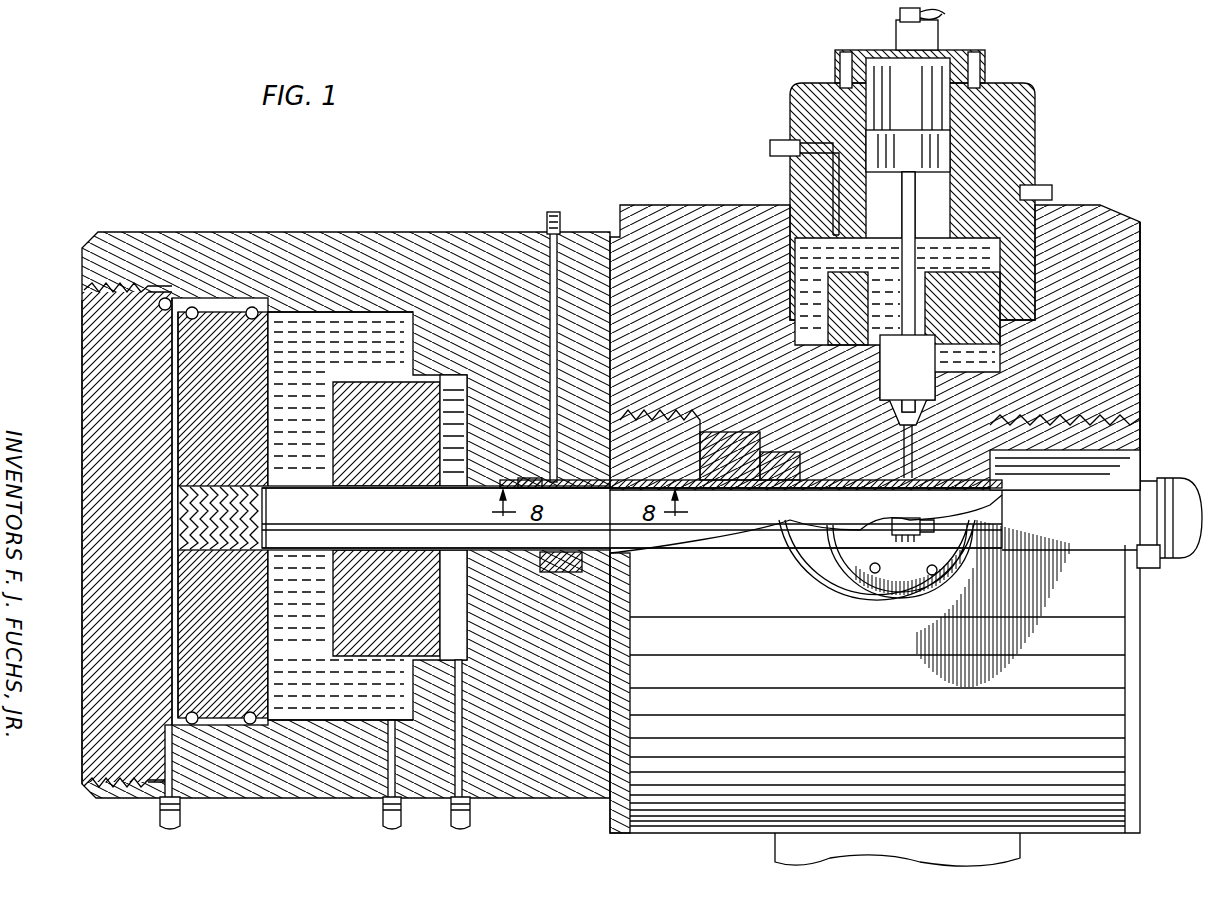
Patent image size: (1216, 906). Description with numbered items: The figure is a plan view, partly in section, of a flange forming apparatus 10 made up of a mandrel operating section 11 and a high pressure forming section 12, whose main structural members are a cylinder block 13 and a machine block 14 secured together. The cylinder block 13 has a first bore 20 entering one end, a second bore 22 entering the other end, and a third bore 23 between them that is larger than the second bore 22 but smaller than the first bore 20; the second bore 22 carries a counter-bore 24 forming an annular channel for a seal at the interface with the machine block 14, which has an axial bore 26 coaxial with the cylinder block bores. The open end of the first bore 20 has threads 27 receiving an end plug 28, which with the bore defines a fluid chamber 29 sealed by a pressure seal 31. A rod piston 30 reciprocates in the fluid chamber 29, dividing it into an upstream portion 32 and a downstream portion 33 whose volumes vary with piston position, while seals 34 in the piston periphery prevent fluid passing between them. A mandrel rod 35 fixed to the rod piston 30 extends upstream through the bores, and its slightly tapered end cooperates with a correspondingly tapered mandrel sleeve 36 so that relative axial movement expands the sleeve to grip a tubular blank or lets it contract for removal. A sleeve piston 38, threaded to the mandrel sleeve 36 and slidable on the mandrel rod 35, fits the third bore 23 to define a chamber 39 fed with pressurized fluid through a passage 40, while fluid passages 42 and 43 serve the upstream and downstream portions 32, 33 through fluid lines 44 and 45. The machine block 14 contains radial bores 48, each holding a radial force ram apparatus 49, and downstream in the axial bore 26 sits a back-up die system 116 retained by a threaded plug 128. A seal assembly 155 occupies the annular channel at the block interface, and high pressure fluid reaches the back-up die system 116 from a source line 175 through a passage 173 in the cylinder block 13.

The flange forming apparatus 10 is at (600, 138).
The mandrel operating section 11 is at (346, 486).
The high pressure forming section 12 is at (899, 505).
The cylinder block 13 is at (304, 233).
The machine block 14 is at (1142, 262).
The first bore 20 is at (345, 315).
The second bore 22 is at (492, 542).
The third bore 23 is at (456, 388).
The counter-bore 24 is at (560, 572).
The axial bore 26 is at (1140, 432).
The threads 27 is at (110, 305).
The end plug 28 is at (82, 382).
The fluid chamber 29 is at (312, 386).
The rod piston 30 is at (262, 675).
The pressure seal 31 is at (190, 305).
The upstream portion 32 is at (344, 718).
The downstream portion 33 is at (172, 680).
The seals 34 is at (252, 306).
The mandrel rod 35 is at (314, 490).
The mandrel sleeve 36 is at (1170, 568).
The sleeve piston 38 is at (336, 632).
The chamber 39 is at (458, 630).
The passage 40 is at (458, 800).
The fluid passage 42 is at (386, 800).
The fluid passage 43 is at (166, 796).
The fluid line 44 is at (398, 832).
The fluid line 45 is at (181, 818).
The radial bore 48 is at (797, 338).
The radial force ram apparatus 49 is at (785, 100).
The back-up die system 116 is at (752, 410).
The threaded plug 128 is at (670, 432).
The seal assembly 155 is at (610, 492).
The passage 173 is at (552, 290).
The high pressure fluid source line 175 is at (553, 240).